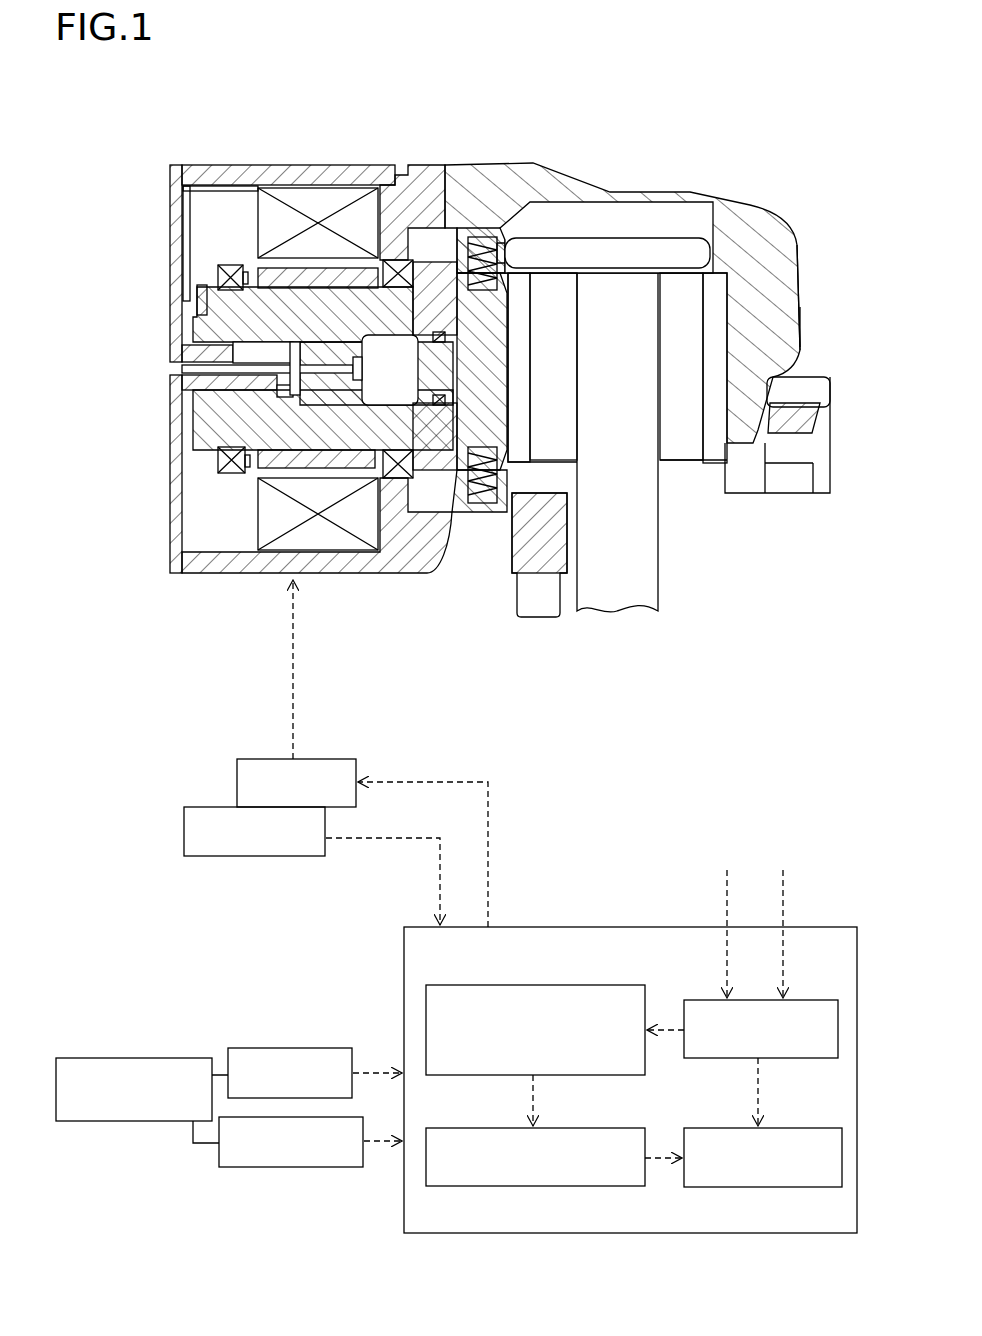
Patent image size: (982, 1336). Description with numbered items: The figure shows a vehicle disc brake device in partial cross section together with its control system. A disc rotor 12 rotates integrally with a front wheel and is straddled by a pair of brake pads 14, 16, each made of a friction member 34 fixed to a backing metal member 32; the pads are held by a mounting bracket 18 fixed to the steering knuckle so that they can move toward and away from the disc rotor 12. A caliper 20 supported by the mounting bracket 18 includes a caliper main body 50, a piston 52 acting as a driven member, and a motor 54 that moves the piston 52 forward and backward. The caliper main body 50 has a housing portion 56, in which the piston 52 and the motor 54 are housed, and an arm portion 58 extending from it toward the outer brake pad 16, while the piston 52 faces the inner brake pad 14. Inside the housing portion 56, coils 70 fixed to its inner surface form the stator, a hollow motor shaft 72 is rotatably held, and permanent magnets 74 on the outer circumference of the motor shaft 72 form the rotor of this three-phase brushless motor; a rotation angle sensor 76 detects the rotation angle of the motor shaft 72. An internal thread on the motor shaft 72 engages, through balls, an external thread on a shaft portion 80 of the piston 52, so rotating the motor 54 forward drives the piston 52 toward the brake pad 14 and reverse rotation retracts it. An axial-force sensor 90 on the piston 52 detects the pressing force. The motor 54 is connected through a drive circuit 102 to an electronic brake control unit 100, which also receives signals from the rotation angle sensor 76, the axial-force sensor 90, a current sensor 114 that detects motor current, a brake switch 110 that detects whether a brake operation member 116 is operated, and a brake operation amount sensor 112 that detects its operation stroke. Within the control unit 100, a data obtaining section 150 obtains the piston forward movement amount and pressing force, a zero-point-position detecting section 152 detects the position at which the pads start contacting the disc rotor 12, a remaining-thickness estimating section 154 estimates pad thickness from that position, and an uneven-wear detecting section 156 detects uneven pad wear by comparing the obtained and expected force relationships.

The disc rotor 12 is at (640, 585).
The brake pad 14 is at (512, 576).
The brake pad 16 is at (730, 536).
The mounting bracket 18 is at (540, 607).
The caliper 20 is at (252, 92).
The backing metal member 32 is at (520, 455).
The friction member 34 is at (550, 450).
The caliper main body 50 is at (740, 184).
The piston 52 is at (515, 272).
The motor 54 is at (208, 513).
The housing portion 56 is at (407, 200).
The arm portion 58 is at (790, 267).
The coil 70 is at (335, 188).
The motor shaft 72 is at (233, 308).
The permanent magnet 74 is at (297, 275).
The rotation angle sensor 76 is at (207, 254).
The shaft portion 80 is at (207, 407).
The axial-force sensor 90 is at (388, 385).
The electronic brake control unit 100 is at (762, 1233).
The drive circuit 102 is at (253, 762).
The brake switch 110 is at (335, 1058).
The brake operation amount sensor 112 is at (343, 1120).
The current sensor 114 is at (200, 810).
The brake operation member 116 is at (147, 1060).
The data obtaining section 150 is at (790, 1003).
The zero-point-position detecting section 152 is at (596, 985).
The remaining-thickness estimating section 154 is at (585, 1128).
The uneven-wear detecting section 156 is at (790, 1128).